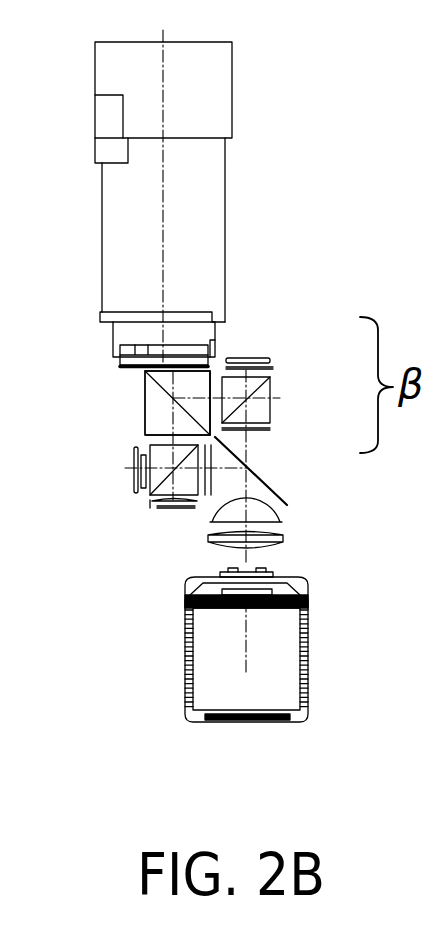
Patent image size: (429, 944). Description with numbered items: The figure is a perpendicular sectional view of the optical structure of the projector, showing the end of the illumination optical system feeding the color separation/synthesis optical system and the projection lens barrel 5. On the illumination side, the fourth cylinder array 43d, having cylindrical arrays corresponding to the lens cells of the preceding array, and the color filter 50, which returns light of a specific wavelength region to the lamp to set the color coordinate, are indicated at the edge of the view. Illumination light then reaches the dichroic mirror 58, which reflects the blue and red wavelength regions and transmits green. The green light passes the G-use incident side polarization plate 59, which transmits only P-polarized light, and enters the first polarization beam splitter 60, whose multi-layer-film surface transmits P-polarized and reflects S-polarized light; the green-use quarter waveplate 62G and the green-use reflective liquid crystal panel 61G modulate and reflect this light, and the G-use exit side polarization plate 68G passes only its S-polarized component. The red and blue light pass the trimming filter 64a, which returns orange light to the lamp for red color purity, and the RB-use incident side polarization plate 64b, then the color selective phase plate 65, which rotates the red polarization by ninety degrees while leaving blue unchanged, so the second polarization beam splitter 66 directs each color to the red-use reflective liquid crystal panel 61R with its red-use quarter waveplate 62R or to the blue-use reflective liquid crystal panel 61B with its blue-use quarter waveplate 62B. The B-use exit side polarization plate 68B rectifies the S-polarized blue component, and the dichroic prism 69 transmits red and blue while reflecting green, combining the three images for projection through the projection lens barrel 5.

The projection lens barrel 5 is at (222, 258).
The G-use exit side polarization plate 68G is at (212, 375).
The green-use reflective liquid crystal panel 61G is at (263, 360).
The green-use quarter waveplate 62G is at (270, 368).
The first polarization beam splitter 60 is at (270, 392).
The G-use incident side polarization plate 59 is at (268, 428).
The dichroic mirror 58 is at (287, 503).
The dichroic prism 69 is at (153, 395).
The B-use exit side polarization plate 68B is at (160, 437).
The second polarization beam splitter 66 is at (163, 465).
The blue-use reflective liquid crystal panel 61B is at (133, 452).
The blue-use quarter waveplate 62B is at (135, 488).
The red-use quarter waveplate 62R is at (157, 508).
The color selective phase plate 65 is at (156, 509).
The red-use reflective liquid crystal panel 61R is at (150, 500).
The fourth cylinder array 43d is at (28, 561).
The color filter 50 is at (16, 600).
The trimming filter 64a is at (211, 495).
The RB-use incident side polarization plate 64b is at (205, 495).